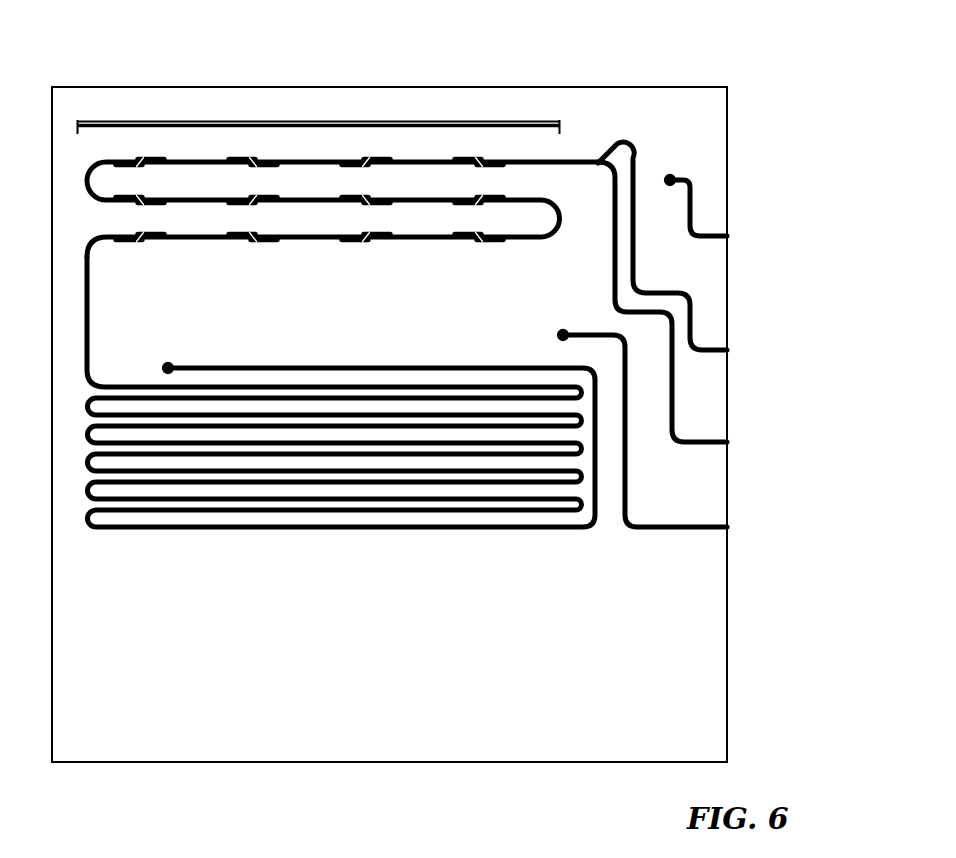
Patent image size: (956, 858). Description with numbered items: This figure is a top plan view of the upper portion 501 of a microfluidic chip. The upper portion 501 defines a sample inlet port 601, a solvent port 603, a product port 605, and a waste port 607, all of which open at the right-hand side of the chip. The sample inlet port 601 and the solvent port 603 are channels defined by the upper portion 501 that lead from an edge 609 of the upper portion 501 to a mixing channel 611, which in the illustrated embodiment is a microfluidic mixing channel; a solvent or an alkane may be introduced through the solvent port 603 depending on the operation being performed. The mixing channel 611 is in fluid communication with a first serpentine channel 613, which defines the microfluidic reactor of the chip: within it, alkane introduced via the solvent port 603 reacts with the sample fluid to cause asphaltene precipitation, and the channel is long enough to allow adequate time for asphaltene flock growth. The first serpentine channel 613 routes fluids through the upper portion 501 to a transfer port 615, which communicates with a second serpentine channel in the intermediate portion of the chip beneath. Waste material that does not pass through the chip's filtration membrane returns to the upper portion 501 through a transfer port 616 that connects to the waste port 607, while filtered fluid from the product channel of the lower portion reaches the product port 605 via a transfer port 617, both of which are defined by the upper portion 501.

The upper portion 501 is at (700, 97).
The sample inlet port 601 is at (690, 322).
The solvent port 603 is at (676, 408).
The product port 605 is at (692, 203).
The waste port 607 is at (690, 530).
The edge 609 is at (727, 677).
The mixing channel 611 is at (397, 122).
The first serpentine channel 613 is at (250, 529).
The transfer port 615 is at (170, 366).
The transfer port 616 is at (560, 337).
The transfer port 617 is at (674, 178).